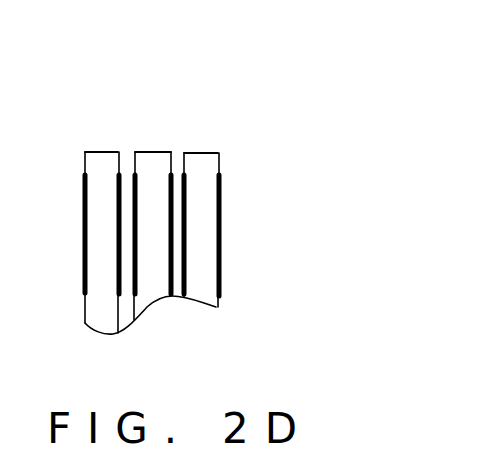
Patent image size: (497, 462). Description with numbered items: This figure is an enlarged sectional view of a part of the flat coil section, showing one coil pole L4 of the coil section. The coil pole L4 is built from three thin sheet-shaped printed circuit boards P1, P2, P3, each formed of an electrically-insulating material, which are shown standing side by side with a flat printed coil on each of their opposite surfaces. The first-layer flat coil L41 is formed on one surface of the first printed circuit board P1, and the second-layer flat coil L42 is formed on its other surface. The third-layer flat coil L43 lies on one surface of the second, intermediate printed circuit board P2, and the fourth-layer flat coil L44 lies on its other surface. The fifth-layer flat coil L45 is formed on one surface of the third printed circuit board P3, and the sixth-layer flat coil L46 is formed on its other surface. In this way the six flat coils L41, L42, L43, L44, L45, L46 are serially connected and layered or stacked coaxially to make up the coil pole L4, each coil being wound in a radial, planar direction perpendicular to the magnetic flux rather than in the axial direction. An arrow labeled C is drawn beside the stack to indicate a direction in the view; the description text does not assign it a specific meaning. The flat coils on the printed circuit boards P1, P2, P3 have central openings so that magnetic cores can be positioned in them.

The coil pole L4 is at (171, 179).
The first-layer flat coil L41 is at (219, 174).
The second-layer flat coil L42 is at (184, 172).
The third-layer flat coil L43 is at (174, 172).
The fourth-layer flat coil L44 is at (136, 172).
The fifth-layer flat coil L45 is at (122, 172).
The sixth-layer flat coil L46 is at (83, 172).
The first printed circuit board P1 is at (200, 288).
The second printed circuit board P2 is at (152, 290).
The third printed circuit board P3 is at (99, 319).
The viewing direction C is at (73, 312).